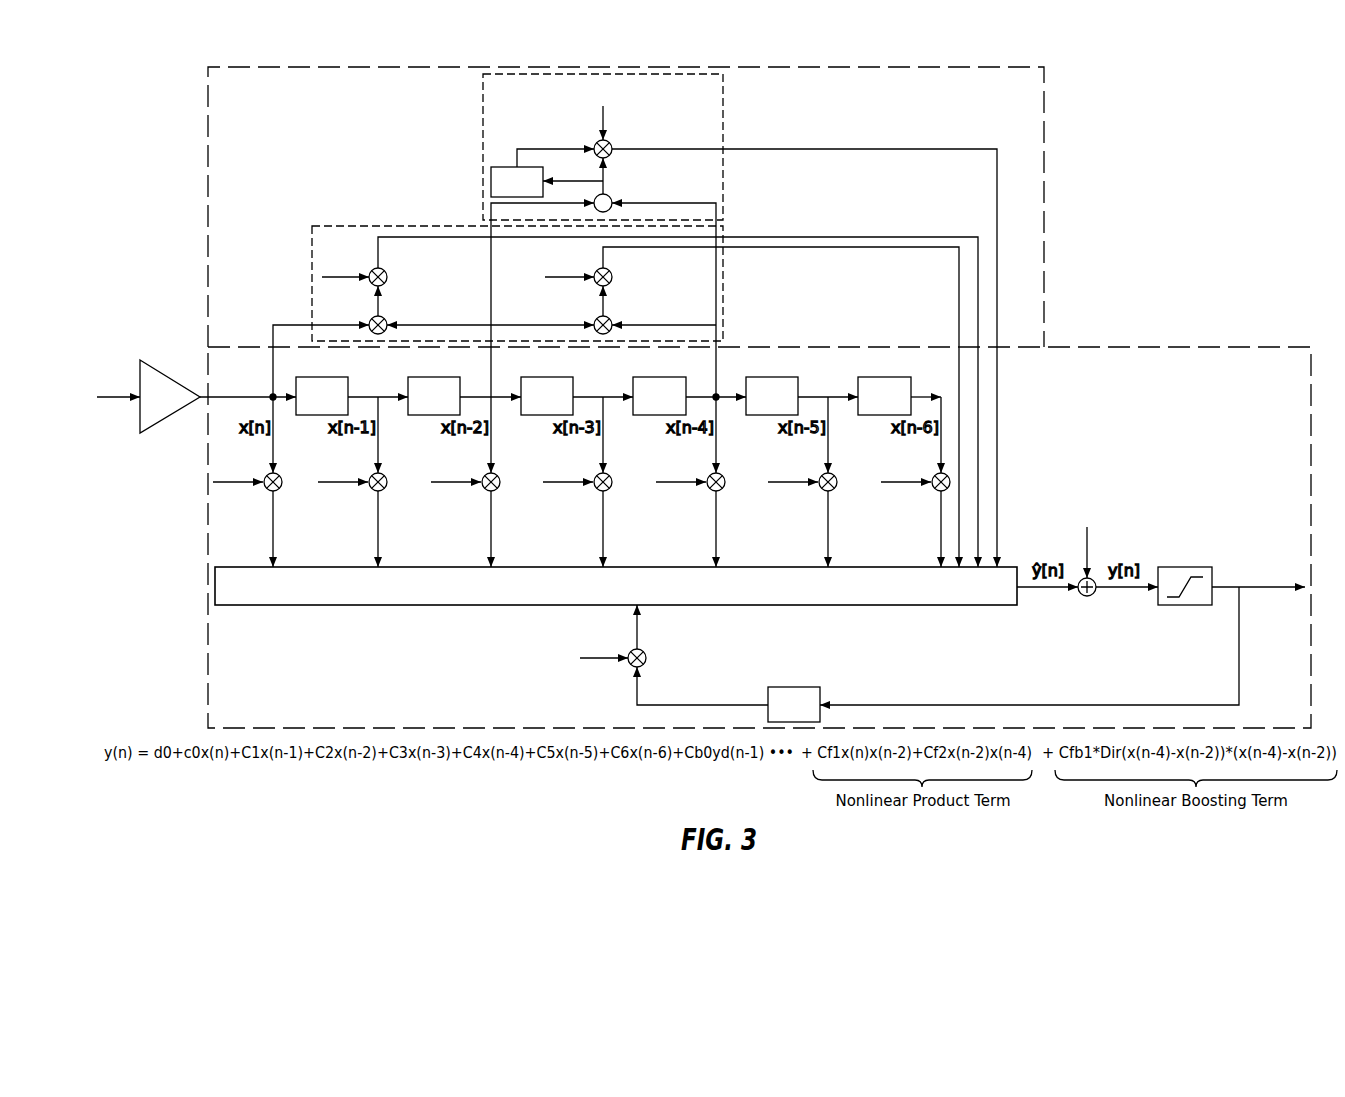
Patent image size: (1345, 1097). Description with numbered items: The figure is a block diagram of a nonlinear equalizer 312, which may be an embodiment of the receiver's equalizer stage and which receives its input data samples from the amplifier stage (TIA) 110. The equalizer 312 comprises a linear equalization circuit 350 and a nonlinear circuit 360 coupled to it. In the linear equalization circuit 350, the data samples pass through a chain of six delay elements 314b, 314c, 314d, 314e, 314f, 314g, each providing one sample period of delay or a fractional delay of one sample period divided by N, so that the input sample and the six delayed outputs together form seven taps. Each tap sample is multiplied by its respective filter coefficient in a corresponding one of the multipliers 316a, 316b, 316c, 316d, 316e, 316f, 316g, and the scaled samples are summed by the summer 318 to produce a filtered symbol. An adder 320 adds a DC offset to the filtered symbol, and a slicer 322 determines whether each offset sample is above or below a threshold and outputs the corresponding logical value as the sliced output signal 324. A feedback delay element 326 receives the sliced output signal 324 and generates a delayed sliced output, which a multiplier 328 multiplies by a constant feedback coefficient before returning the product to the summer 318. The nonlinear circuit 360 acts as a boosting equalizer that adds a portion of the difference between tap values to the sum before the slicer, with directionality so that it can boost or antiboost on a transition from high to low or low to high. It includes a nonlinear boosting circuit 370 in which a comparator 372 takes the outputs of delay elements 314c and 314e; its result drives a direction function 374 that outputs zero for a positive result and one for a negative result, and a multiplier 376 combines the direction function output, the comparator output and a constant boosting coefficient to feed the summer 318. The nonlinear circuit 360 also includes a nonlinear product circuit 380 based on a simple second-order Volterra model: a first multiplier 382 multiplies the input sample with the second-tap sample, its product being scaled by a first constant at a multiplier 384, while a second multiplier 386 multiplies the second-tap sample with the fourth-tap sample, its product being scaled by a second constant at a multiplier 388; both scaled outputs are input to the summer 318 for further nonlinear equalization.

The amplifier stage (TIA) 110 is at (146, 362).
The nonlinear equalizer 312 is at (1253, 108).
The delay element 314b is at (324, 377).
The delay element 314c is at (436, 377).
The delay element 314d is at (549, 377).
The delay element 314e is at (661, 377).
The delay element 314f is at (774, 377).
The delay element 314g is at (886, 377).
The multiplier 316a is at (267, 490).
The multiplier 316b is at (372, 490).
The multiplier 316c is at (485, 490).
The multiplier 316d is at (597, 490).
The multiplier 316e is at (710, 490).
The multiplier 316f is at (822, 490).
The multiplier 316g is at (935, 490).
The summer 318 is at (975, 605).
The adder 320 is at (1085, 596).
The slicer 322 is at (1185, 605).
The sliced output signal 324 is at (1250, 590).
The feedback delay element 326 is at (808, 687).
The multiplier 328 is at (646, 664).
The linear equalization circuit 350 is at (1058, 347).
The nonlinear circuit 360 is at (1044, 305).
The nonlinear boosting circuit 370 is at (483, 122).
The comparator 372 is at (611, 197).
The direction function 374 is at (490, 180).
The multiplier 376 is at (610, 142).
The nonlinear product circuit 380 is at (312, 247).
The first multiplier 382 is at (386, 318).
The multiplier 384 is at (386, 270).
The second multiplier 386 is at (611, 318).
The multiplier 388 is at (596, 286).